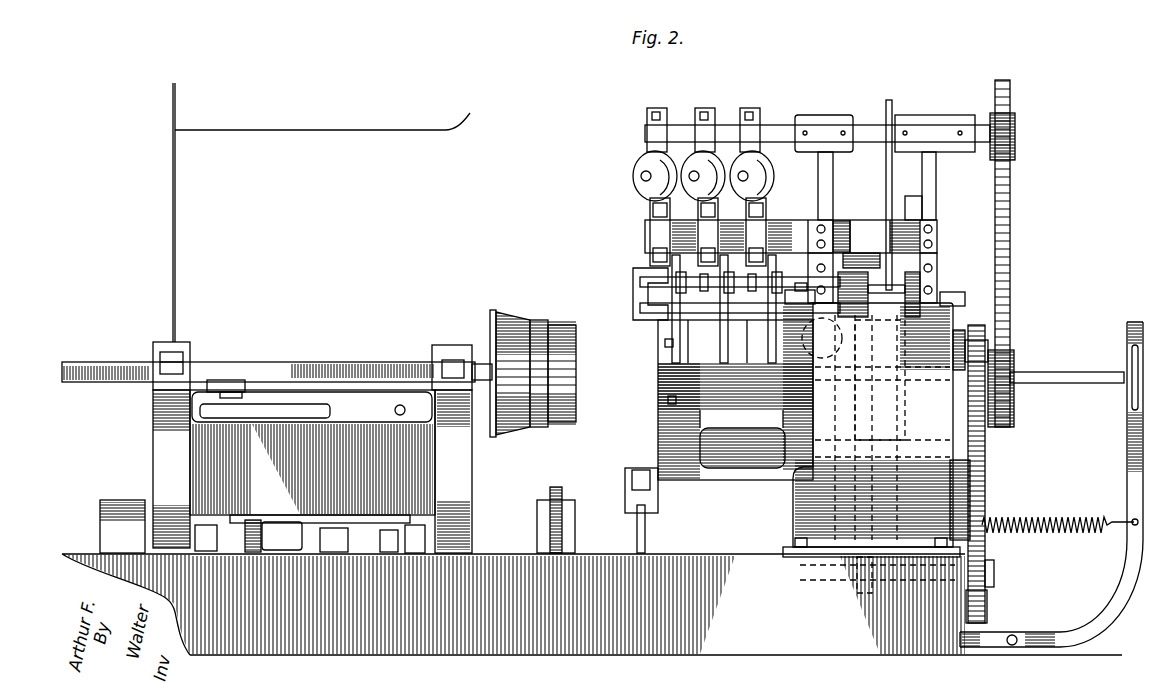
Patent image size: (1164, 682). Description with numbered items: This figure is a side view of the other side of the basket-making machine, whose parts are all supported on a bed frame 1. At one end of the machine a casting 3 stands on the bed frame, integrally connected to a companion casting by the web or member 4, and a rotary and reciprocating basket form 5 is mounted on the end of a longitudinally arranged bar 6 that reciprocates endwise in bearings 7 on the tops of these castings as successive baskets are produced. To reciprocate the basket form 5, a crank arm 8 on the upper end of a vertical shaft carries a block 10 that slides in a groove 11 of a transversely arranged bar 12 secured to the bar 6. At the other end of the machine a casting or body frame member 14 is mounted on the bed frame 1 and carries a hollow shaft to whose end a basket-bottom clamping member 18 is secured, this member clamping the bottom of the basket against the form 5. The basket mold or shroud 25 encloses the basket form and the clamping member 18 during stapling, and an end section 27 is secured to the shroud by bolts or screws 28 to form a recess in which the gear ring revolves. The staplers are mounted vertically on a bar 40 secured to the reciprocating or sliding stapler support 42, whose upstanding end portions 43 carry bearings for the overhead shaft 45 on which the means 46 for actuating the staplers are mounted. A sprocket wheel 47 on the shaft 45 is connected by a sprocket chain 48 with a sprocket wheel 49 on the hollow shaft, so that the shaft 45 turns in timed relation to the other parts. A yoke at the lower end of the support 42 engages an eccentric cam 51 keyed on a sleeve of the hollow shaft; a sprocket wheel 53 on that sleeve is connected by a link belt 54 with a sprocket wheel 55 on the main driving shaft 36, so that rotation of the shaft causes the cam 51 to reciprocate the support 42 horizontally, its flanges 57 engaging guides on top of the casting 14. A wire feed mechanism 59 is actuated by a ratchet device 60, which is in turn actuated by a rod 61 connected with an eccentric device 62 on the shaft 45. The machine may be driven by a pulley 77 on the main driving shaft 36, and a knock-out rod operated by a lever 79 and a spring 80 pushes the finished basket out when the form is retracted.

The bed frame 1 is at (592, 604).
The casting 3 is at (172, 448).
The web or member 4 is at (355, 432).
The rotary and reciprocating basket form 5 is at (541, 318).
The longitudinally arranged bar 6 is at (335, 375).
The bearings 7 is at (182, 345).
The crank arm 8 is at (262, 408).
The block 10 is at (218, 390).
The groove 11 is at (232, 390).
The transversely arranged bar 12 is at (203, 378).
The casting or body frame member 14 is at (795, 506).
The basket-bottom clamping member 18 is at (1086, 372).
The basket mold or shroud 25 is at (735, 392).
The end section 27 is at (660, 420).
The bolts or screws 28 is at (677, 398).
The main driving shaft 36 is at (830, 585).
The bar 40 is at (793, 228).
The reciprocating or sliding casting or stapler support 42 is at (863, 250).
The upstanding end portions 43 is at (838, 196).
The overhead shaft 45 is at (780, 135).
The means for actuating the staplers 46 is at (757, 112).
The sprocket wheel 47 is at (1018, 112).
The sprocket chain 48 is at (1013, 225).
The sprocket wheel 49 is at (1014, 366).
The eccentric cam 51 is at (805, 306).
The sprocket wheel 53 is at (985, 352).
The link belt 54 is at (985, 462).
The sprocket wheel 55 is at (988, 594).
The flanges 57 is at (945, 300).
The feed mechanism 59 is at (660, 277).
The ratchet device 60 is at (934, 270).
The rod 61 is at (905, 210).
The eccentric device 62 is at (893, 120).
The pulley 77 is at (112, 500).
The lever 79 is at (1128, 460).
The spring 80 is at (1030, 515).